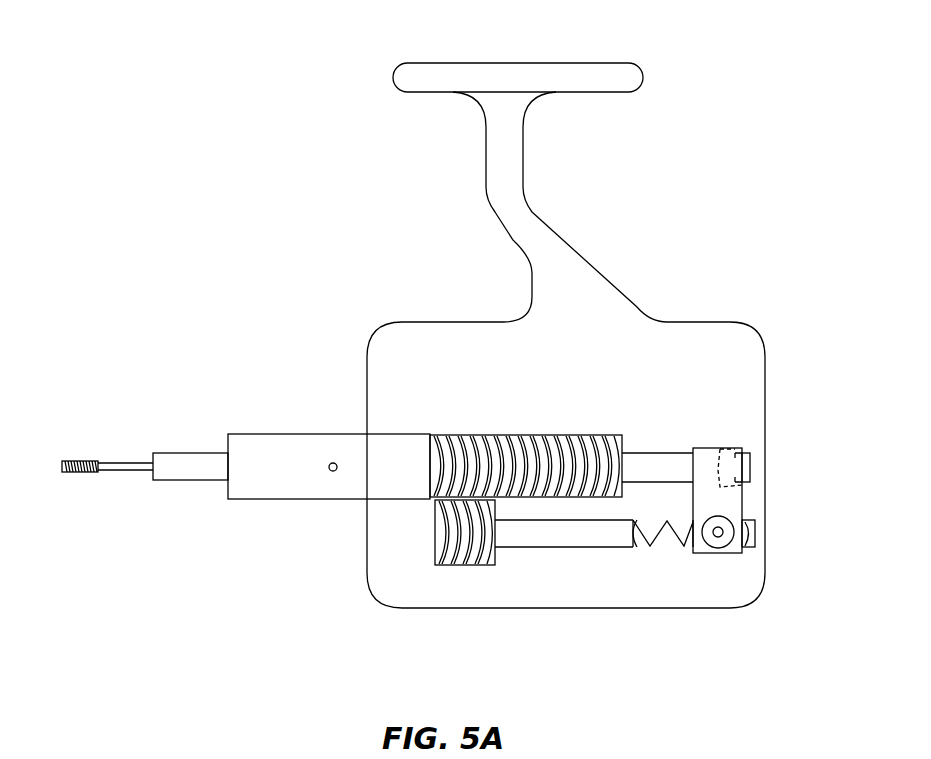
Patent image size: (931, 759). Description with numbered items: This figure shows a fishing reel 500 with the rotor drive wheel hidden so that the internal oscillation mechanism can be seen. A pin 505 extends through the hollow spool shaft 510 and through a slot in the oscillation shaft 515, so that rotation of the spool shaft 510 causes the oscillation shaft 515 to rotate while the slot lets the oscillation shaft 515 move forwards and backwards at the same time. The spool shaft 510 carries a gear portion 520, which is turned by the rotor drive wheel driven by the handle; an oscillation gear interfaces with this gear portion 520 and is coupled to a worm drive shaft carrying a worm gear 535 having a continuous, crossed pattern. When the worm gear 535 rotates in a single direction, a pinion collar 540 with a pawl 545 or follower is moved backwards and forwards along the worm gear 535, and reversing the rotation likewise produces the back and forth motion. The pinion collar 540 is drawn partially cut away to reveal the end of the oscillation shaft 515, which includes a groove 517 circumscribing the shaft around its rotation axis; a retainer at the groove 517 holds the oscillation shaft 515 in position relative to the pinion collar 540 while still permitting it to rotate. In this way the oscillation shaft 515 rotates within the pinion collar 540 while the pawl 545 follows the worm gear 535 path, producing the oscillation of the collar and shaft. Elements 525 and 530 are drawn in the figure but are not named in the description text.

The fishing reel 500 is at (231, 228).
The pin 505 is at (331, 472).
The spool shaft 510 is at (297, 434).
The oscillation shaft 515 is at (172, 452).
The groove 517 is at (735, 449).
The gear portion 520 is at (512, 435).
The secondary coil spring 525 is at (450, 565).
The actuator rod 530 is at (565, 542).
The worm gear 535 is at (663, 516).
The pinion collar 540 is at (735, 512).
The pawl 545 is at (715, 537).